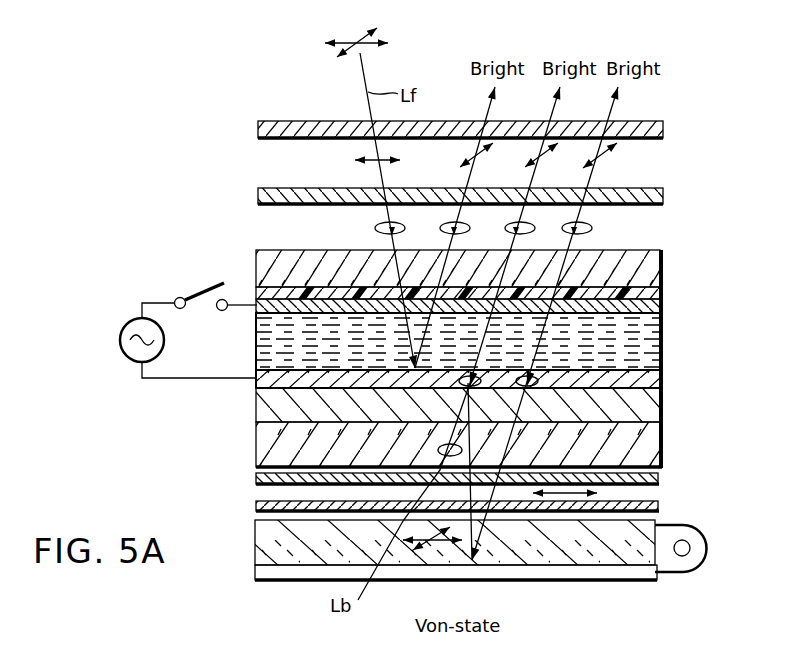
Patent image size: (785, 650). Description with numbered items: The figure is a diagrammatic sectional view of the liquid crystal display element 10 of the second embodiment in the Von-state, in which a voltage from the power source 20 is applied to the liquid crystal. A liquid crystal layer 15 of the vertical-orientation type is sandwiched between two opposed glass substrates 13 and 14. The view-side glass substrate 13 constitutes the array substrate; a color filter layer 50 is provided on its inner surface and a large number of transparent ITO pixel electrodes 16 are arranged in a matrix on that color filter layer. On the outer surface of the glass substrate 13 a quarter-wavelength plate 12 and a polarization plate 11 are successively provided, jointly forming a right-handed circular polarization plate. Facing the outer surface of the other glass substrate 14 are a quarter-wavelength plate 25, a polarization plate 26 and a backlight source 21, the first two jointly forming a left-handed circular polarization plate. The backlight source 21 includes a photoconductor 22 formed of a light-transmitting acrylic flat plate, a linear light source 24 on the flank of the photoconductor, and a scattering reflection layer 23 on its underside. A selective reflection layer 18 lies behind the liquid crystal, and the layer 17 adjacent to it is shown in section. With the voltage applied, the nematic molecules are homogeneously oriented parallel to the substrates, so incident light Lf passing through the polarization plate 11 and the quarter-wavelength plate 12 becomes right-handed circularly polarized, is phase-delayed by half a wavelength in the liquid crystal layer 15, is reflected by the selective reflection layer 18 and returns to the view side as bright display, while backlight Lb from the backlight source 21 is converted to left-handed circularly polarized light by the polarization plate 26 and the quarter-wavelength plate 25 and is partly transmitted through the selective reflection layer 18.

The liquid crystal display device 10 is at (298, 102).
The polarization plate 11 is at (665, 131).
The λ/4-wavelength plate 12 is at (665, 198).
The glass substrate 13 is at (663, 265).
The glass substrate 14 is at (663, 446).
The liquid crystal layer 15 is at (663, 345).
The pixel electrodes 16 is at (663, 305).
The transflective reflector 17 is at (663, 384).
The selective reflection layer 18 is at (663, 410).
The power source 20 is at (130, 356).
The backlight source 21 is at (668, 585).
The photoconductor 22 is at (255, 548).
The scattering reflection layer 23 is at (571, 562).
The linear light source 24 is at (707, 547).
The λ/4-wavelength plate 25 is at (256, 478).
The polarization plate 26 is at (256, 505).
The color filter layer 50 is at (256, 294).